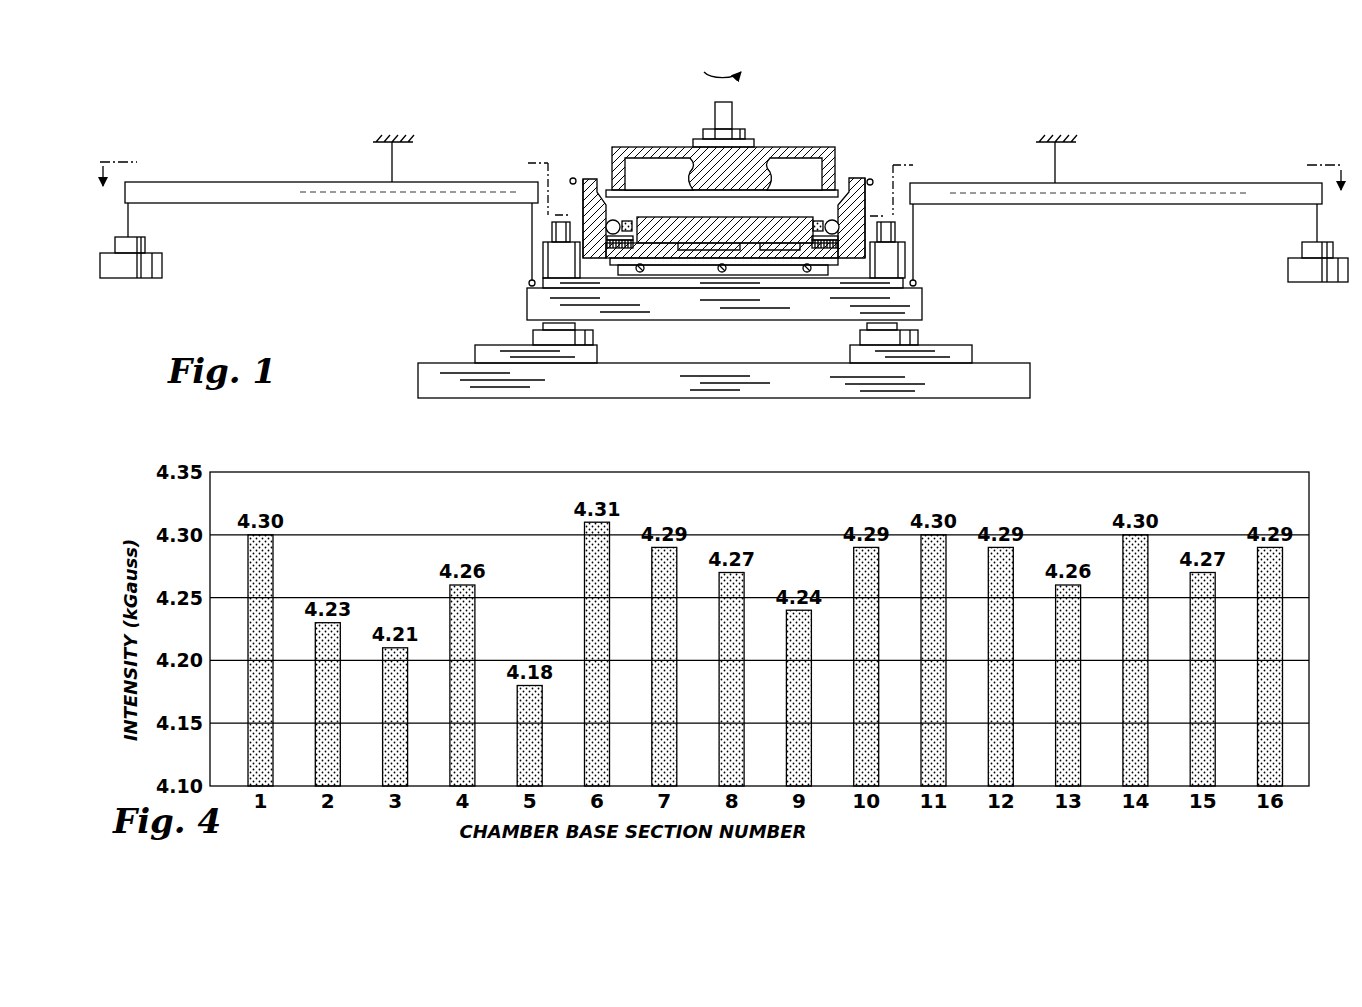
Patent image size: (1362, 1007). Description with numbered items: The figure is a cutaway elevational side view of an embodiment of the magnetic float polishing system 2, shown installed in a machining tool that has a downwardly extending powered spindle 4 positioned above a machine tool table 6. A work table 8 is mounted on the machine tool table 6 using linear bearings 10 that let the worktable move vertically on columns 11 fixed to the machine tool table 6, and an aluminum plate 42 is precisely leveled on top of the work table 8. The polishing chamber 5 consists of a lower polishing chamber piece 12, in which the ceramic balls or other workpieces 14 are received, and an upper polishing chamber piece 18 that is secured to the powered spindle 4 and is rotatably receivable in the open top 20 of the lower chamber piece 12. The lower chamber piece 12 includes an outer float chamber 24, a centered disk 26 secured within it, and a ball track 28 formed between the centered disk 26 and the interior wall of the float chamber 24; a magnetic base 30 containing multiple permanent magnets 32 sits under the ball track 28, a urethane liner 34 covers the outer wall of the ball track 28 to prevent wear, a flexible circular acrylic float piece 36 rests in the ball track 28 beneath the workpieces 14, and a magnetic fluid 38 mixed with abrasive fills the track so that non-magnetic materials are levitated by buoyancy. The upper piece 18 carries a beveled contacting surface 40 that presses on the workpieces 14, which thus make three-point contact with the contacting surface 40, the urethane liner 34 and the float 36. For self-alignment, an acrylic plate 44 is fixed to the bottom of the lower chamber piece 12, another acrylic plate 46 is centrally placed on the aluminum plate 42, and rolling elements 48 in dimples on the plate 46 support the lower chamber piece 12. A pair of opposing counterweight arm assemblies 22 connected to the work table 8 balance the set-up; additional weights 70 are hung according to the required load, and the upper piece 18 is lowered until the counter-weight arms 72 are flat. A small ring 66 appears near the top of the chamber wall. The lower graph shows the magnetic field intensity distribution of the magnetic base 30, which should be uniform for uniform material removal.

The magnetic float polishing system 2 is at (848, 70).
The powered spindle 4 is at (733, 108).
The polishing chamber 5 is at (808, 147).
The machine tool table 6 is at (418, 366).
The work table 8 is at (527, 303).
The linear bearings 10 is at (543, 236).
The columns 11 is at (543, 321).
The lower polishing chamber piece 12 is at (722, 193).
The workpieces 14 is at (613, 221).
The upper polishing chamber piece 18 is at (637, 147).
The open top 20 is at (691, 180).
The counterweight arm assemblies 22 is at (345, 182).
The outer float chamber 24 is at (634, 171).
The centered disk 26 is at (714, 226).
The ball track 28 is at (883, 182).
The magnetic base 30 is at (813, 272).
The permanent magnets 32 is at (838, 262).
The urethane liner 34 is at (866, 200).
The acrylic float piece 36 is at (793, 252).
The magnetic fluid 38 is at (841, 212).
The beveled contacting surface 40 is at (622, 201).
The aluminum plate 42 is at (860, 284).
The acrylic plate 44 is at (612, 262).
The acrylic plate 46 is at (621, 276).
The rolling elements 48 is at (642, 272).
The ring 66 is at (573, 178).
The additional weights 70 is at (162, 262).
The counter-weight arms 72 is at (423, 193).